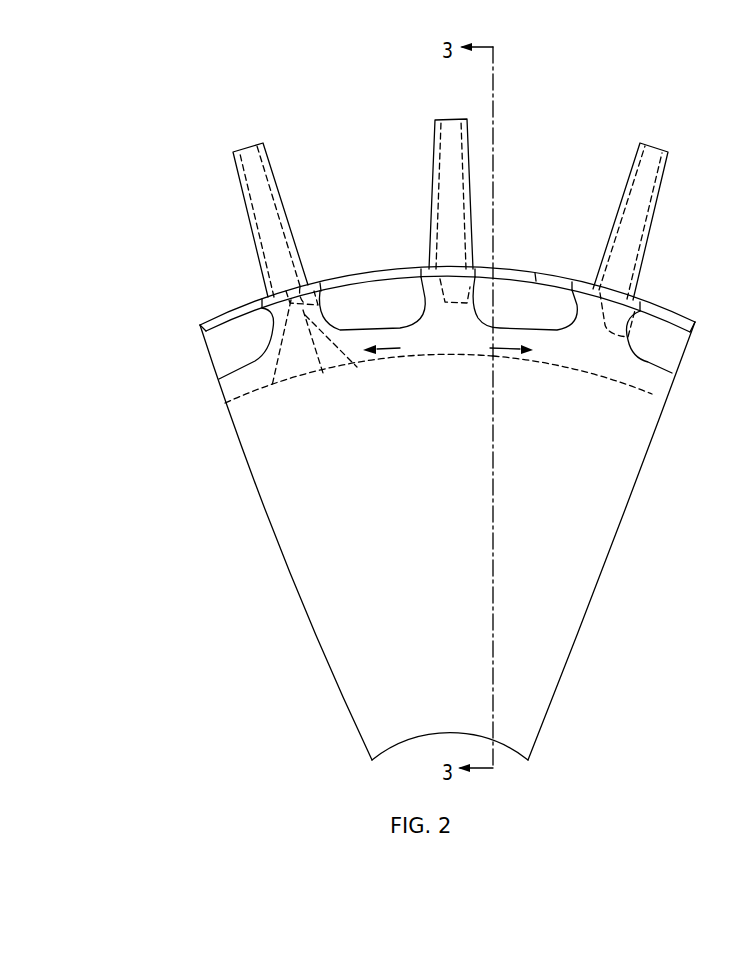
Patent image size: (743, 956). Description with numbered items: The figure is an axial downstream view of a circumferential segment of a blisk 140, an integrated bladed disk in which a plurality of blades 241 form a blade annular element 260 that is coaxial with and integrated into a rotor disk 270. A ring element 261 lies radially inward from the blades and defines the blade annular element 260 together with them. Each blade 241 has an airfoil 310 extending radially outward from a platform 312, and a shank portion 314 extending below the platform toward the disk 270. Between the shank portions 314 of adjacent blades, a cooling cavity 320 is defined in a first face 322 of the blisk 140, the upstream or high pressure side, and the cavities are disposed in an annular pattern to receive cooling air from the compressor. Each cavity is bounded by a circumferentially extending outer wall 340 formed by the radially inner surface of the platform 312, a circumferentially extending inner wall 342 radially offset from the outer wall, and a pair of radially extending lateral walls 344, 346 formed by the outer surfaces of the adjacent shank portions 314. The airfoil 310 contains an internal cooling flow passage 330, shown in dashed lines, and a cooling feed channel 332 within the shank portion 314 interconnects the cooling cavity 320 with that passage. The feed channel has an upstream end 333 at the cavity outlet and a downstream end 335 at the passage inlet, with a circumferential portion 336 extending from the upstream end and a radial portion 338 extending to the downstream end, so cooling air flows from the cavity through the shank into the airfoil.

The blisk 140 is at (553, 113).
The blade 241 is at (247, 153).
The blade annular element 260 is at (224, 386).
The ring element 261 is at (650, 391).
The rotor disk 270 is at (578, 603).
The airfoil 310 is at (260, 203).
The platform 312 is at (535, 278).
The shank portion 314 is at (268, 342).
The cooling cavity 320 is at (214, 333).
The first face 322 is at (377, 551).
The internal cooling flow passage 330 is at (282, 190).
The cooling feed channel 332 is at (317, 356).
The upstream end 333 is at (322, 308).
The downstream end 335 is at (297, 282).
The circumferential portion 336 is at (334, 358).
The radial portion 338 is at (276, 357).
The outer wall 340 is at (500, 285).
The inner wall 342 is at (540, 332).
The lateral wall 344 is at (478, 317).
The lateral wall 346 is at (577, 320).